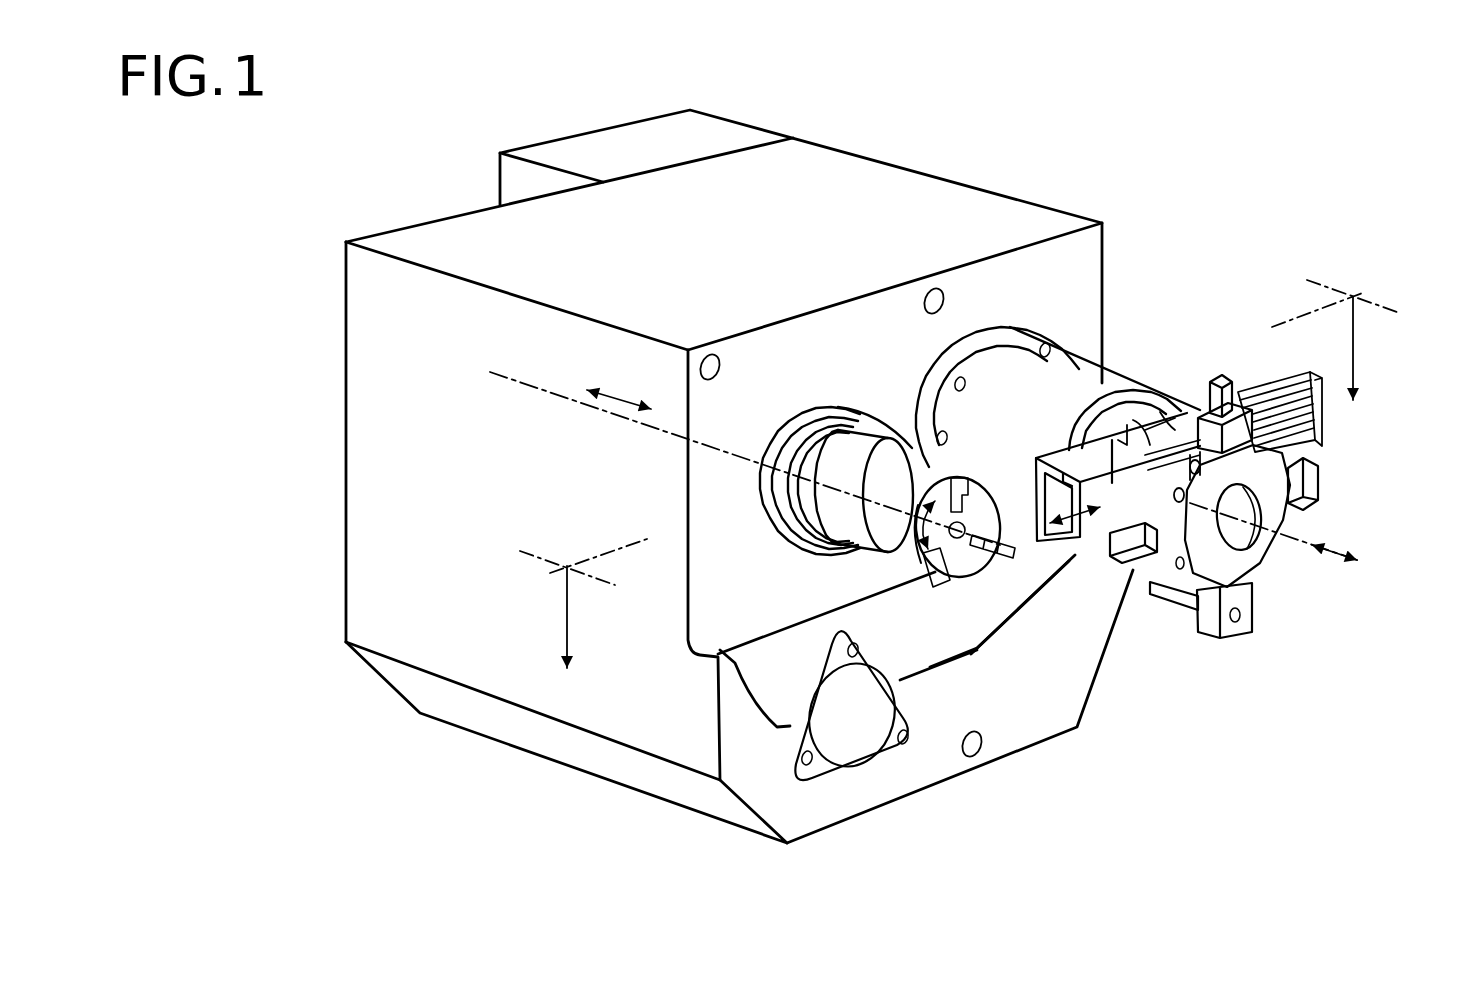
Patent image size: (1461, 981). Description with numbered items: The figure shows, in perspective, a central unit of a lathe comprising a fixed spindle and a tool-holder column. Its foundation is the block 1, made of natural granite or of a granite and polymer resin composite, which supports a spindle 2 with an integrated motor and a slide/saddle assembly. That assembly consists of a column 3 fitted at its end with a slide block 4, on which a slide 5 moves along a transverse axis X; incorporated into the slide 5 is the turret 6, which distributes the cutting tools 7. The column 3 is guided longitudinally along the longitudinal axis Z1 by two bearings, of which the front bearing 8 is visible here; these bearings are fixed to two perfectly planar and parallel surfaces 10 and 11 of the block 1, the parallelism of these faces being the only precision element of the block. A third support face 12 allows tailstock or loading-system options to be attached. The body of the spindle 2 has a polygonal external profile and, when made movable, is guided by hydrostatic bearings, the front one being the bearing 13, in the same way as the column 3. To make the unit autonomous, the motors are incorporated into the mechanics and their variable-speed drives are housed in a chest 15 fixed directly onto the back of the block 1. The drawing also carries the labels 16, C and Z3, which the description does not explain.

The block 1 is at (940, 198).
The spindle 2 is at (868, 448).
The column 3 is at (1067, 383).
The slide block 4 is at (1138, 415).
The slide 5 is at (1115, 667).
The turret 6 is at (1182, 453).
The cutting tools 7 is at (1243, 595).
The bearing 8 is at (1000, 330).
The planar surface 10 is at (783, 337).
The planar surface 11 is at (392, 335).
The third support face 12 is at (893, 750).
The front hydrostatic bearing 13 is at (840, 408).
The chest 15 is at (513, 175).
The guide rail 16 is at (1293, 435).
The spindle rotation axis C is at (915, 532).
The transverse axis X is at (1073, 557).
The longitudinal axis Z1 is at (1348, 545).
The Z3 axis Z3 is at (620, 398).